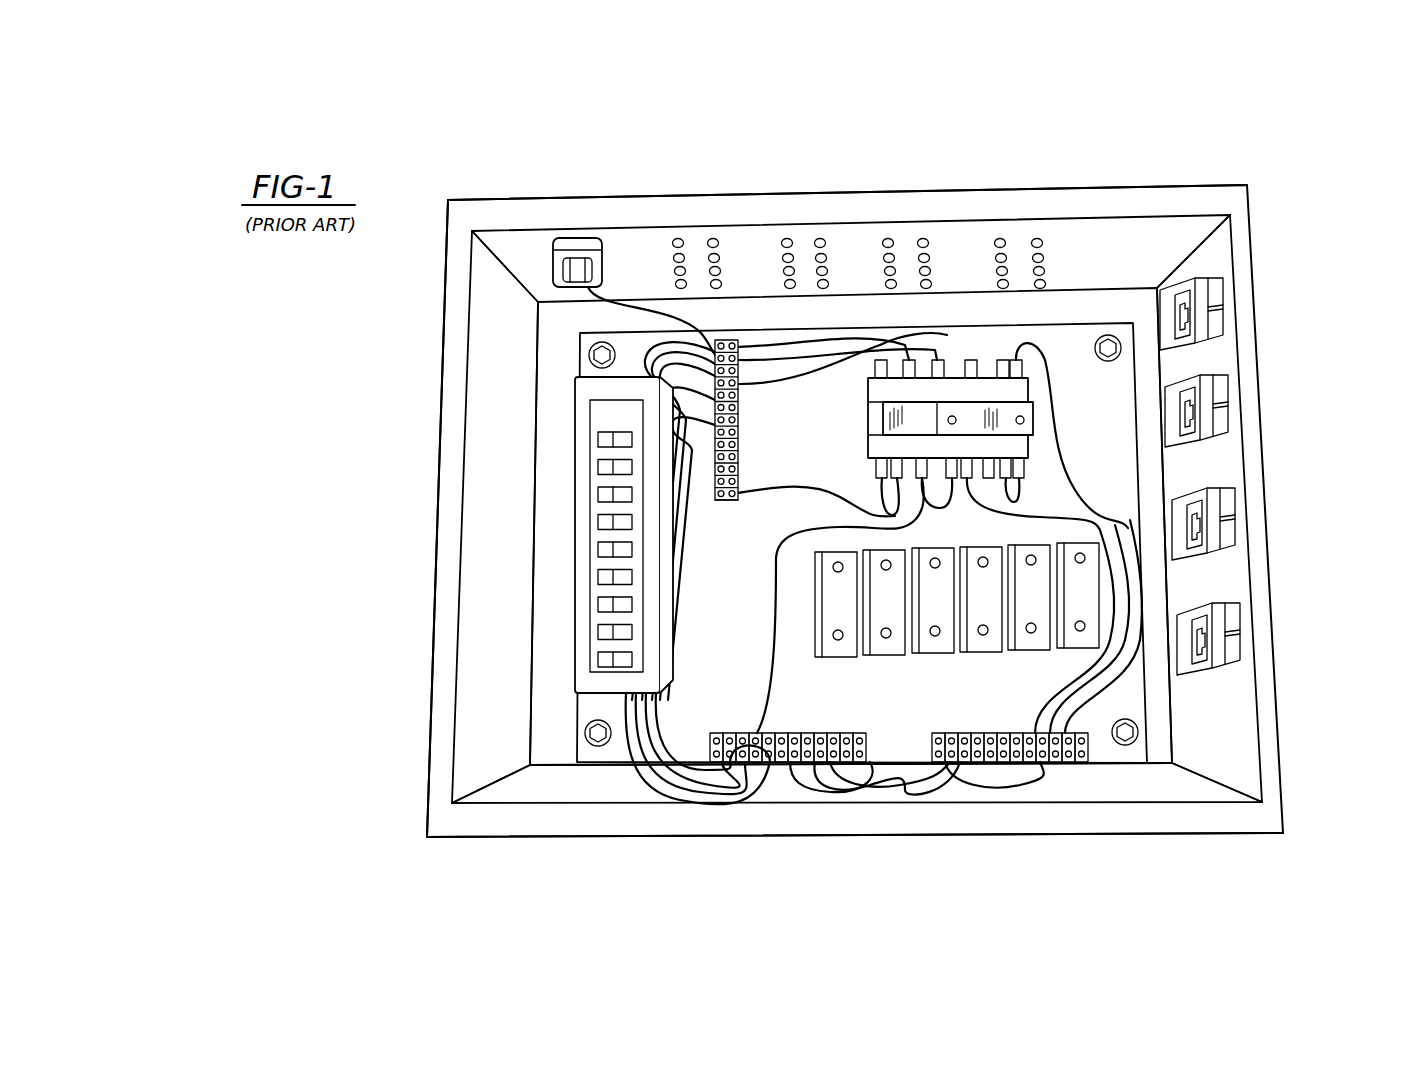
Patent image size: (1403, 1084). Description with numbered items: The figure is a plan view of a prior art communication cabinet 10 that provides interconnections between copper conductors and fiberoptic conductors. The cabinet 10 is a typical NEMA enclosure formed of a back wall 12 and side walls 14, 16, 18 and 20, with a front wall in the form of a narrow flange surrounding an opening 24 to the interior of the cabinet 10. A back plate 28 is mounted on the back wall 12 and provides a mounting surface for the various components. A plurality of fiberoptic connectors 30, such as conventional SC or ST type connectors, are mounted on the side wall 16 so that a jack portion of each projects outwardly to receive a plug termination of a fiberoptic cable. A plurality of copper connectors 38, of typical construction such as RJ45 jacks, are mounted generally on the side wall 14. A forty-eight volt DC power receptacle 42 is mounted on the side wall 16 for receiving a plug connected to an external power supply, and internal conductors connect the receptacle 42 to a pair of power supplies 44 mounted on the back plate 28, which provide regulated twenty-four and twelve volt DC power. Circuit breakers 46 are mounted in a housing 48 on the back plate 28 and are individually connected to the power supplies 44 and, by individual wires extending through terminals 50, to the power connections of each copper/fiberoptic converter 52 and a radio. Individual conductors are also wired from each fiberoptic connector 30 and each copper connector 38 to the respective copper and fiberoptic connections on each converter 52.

The cabinet 10 is at (1307, 231).
The back wall 12 is at (553, 758).
The side wall 14 is at (1278, 652).
The side wall 16 is at (727, 195).
The side wall 18 is at (435, 537).
The side wall 20 is at (620, 838).
The opening 24 is at (483, 390).
The back plate 28 is at (890, 747).
The fiberoptic connectors 30 is at (787, 238).
The copper connectors 38 is at (1218, 387).
The 48 VDC power receptacle 42 is at (602, 255).
The power supplies 44 is at (918, 417).
The circuit breakers 46 is at (598, 438).
The housing 48 is at (580, 675).
The terminals 50 is at (738, 408).
The converters 52 is at (892, 652).